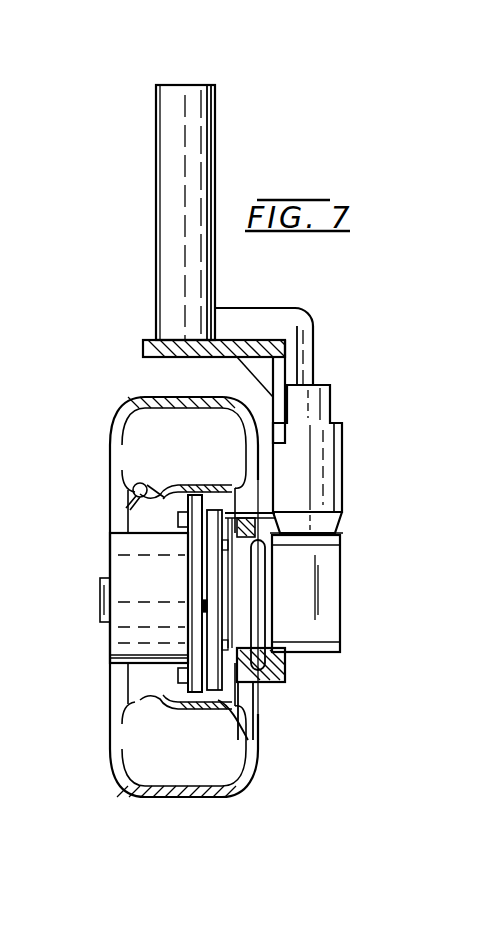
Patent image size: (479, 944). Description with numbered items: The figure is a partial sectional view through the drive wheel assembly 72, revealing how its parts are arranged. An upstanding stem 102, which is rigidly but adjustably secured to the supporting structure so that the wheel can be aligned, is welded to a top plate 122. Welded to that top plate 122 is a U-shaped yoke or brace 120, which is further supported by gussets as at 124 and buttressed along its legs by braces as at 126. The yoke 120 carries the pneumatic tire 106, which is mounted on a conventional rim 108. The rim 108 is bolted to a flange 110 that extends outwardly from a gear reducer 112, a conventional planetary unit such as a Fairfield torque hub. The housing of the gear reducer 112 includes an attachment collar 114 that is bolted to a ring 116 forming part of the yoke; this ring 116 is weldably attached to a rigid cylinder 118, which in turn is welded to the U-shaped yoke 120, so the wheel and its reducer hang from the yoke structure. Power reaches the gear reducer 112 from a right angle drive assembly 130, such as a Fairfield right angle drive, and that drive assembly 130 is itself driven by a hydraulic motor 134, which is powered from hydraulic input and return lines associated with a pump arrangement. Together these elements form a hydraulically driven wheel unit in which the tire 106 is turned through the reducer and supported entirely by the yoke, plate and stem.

The drive wheel assembly 72 is at (370, 171).
The upstanding stem 102 is at (200, 134).
The pneumatic tire 106 is at (118, 428).
The rim 108 is at (135, 497).
The flange 110 is at (178, 522).
The gear reducer 112 is at (118, 633).
The attachment collar 114 is at (228, 675).
The ring 116 is at (258, 676).
The rigid cylinder 118 is at (255, 703).
The U-shaped yoke 120 is at (288, 660).
The top plate 122 is at (143, 348).
The gusset 124 is at (262, 384).
The brace 126 is at (278, 322).
The right angle drive assembly 130 is at (330, 598).
The hydraulic motor 134 is at (325, 468).